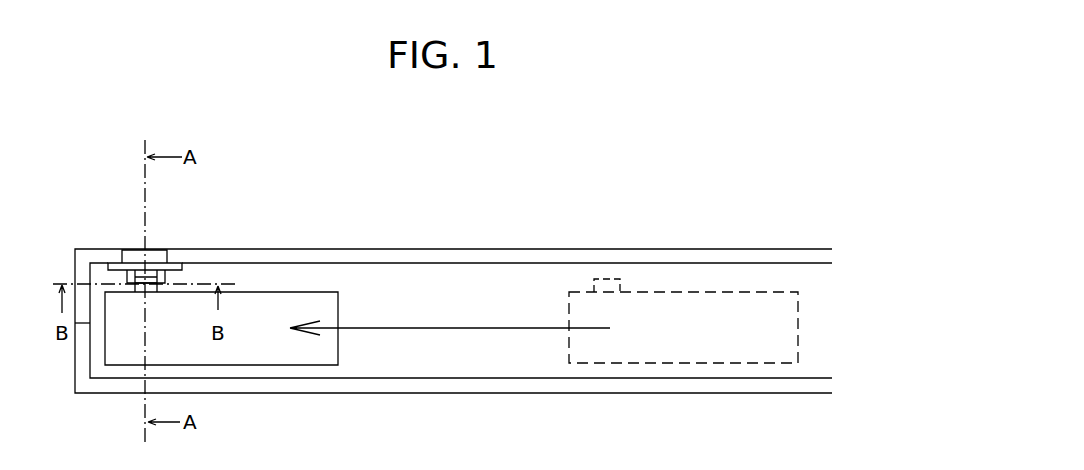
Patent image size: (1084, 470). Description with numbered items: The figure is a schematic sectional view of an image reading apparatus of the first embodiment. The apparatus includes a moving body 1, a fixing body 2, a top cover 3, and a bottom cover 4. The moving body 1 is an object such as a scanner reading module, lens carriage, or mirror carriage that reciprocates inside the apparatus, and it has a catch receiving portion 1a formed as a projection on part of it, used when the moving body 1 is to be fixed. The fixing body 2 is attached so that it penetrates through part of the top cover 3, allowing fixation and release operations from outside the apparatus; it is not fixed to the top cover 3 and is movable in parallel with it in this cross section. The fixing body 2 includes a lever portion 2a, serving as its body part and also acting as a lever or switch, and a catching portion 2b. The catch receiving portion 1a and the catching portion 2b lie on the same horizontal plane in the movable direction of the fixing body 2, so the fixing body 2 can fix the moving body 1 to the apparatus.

The moving body 1 is at (283, 357).
The catch receiving portion 1a is at (142, 284).
The fixing body 2 is at (155, 252).
The lever portion 2a is at (120, 271).
The catching portion 2b is at (137, 258).
The top cover 3 is at (267, 251).
The bottom cover 4 is at (423, 385).